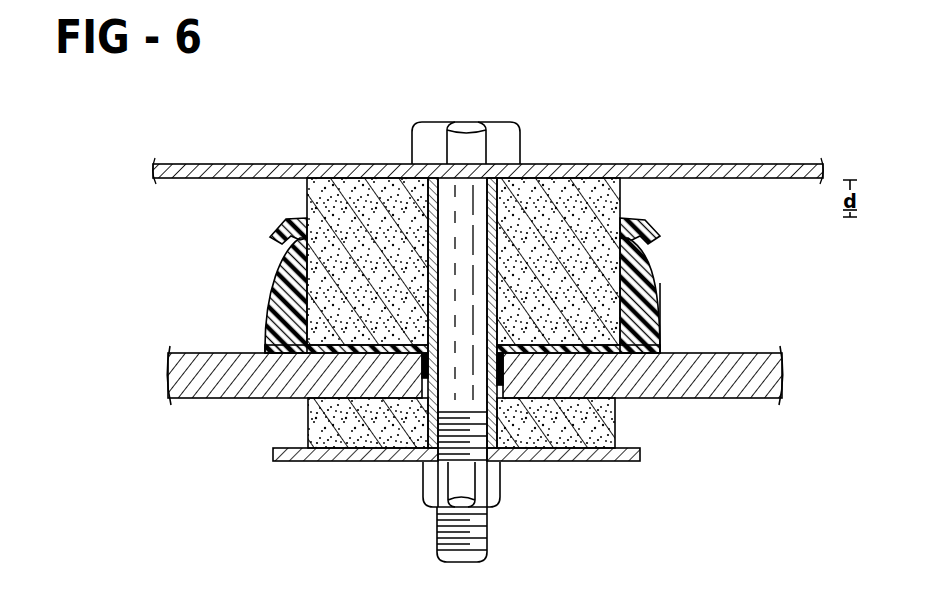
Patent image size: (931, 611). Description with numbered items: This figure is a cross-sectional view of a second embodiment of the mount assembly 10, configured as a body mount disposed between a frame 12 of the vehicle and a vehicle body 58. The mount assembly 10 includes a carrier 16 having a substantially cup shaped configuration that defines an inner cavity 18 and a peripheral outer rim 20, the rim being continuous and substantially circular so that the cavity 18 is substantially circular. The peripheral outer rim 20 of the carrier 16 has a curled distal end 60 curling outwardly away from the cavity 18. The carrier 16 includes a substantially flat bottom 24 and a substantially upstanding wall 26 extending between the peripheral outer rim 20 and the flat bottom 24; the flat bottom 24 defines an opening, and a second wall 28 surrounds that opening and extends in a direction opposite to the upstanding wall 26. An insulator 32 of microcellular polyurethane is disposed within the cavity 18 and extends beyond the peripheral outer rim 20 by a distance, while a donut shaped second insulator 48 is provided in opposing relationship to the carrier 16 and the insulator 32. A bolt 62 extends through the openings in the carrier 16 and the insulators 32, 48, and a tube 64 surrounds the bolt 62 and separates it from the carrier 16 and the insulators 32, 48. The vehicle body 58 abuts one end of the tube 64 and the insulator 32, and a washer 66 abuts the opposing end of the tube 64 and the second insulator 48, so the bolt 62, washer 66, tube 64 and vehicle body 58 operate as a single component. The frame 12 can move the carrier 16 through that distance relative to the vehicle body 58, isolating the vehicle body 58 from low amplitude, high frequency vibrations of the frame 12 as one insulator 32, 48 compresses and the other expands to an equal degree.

The mount assembly 10 is at (155, 298).
The frame 12 is at (727, 362).
The carrier 16 is at (660, 283).
The inner cavity 18 is at (268, 289).
The peripheral outer rim 20 is at (628, 213).
The flat bottom 24 is at (325, 328).
The upstanding wall 26 is at (660, 313).
The second wall 28 is at (505, 370).
The insulator 32 is at (543, 187).
The second insulator 48 is at (333, 432).
The vehicle body 58 is at (710, 167).
The curled distal end 60 is at (290, 231).
The bolt 62 is at (461, 184).
The tube 64 is at (427, 200).
The washer 66 is at (540, 455).